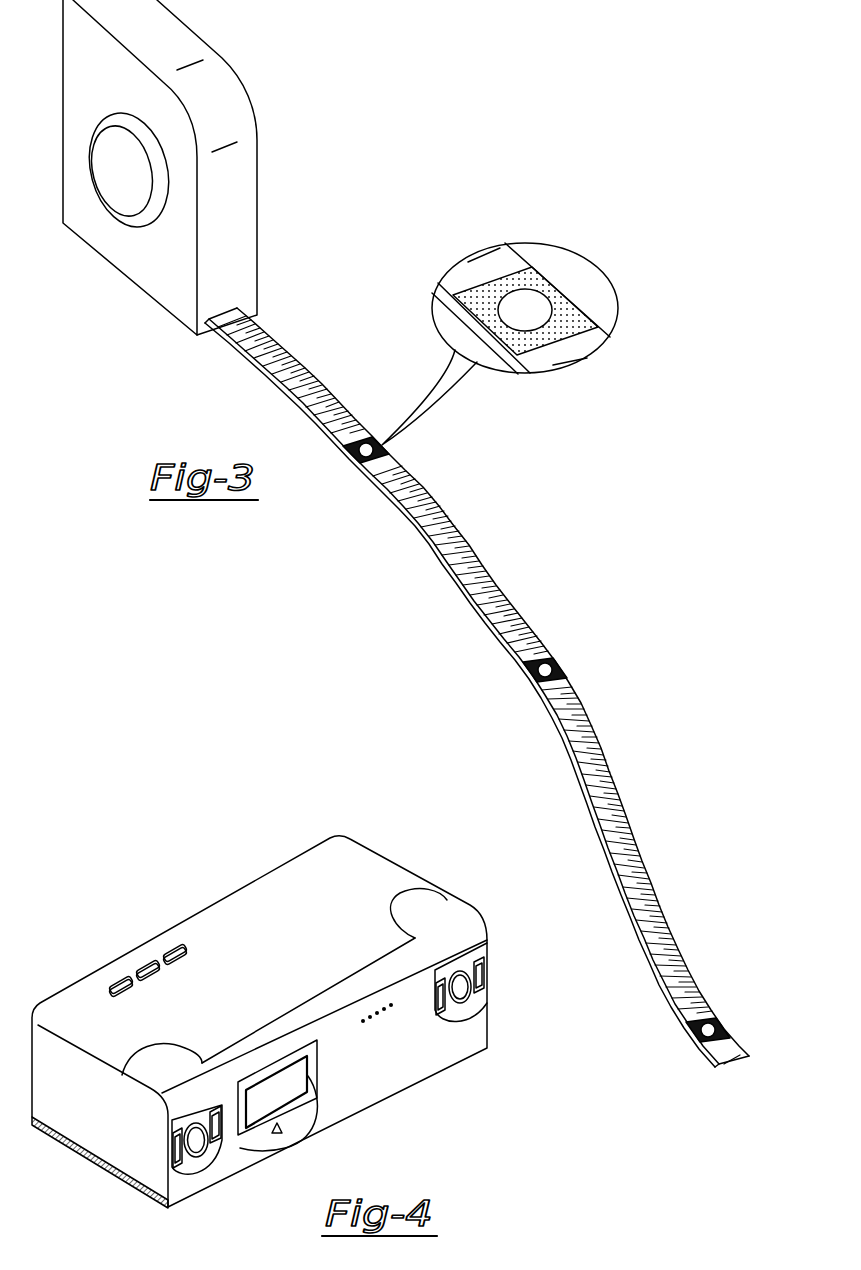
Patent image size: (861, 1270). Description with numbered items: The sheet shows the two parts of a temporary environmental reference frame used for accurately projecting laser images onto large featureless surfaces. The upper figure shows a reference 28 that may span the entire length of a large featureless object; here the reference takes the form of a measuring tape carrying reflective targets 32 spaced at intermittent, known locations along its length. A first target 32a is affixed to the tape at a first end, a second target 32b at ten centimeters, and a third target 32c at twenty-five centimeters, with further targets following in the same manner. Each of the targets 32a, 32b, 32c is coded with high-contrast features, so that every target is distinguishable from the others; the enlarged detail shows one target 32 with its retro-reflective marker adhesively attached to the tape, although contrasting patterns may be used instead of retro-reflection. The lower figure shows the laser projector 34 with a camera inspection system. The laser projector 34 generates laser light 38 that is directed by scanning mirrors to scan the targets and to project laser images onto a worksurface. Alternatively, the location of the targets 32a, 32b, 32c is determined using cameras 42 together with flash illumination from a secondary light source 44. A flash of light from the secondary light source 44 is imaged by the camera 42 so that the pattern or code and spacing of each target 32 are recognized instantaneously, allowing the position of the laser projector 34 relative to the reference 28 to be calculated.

In FIG. 3, the reference 28 is at (463, 528).
In FIG. 3, the reflective targets 32 is at (578, 272).
In FIG. 3, the first target 32a is at (695, 1042).
In FIG. 3, the second target 32b is at (527, 670).
In FIG. 3, the third target 32c is at (350, 457).
In FIG. 4, the laser projector 34 is at (266, 969).
In FIG. 4, the laser light 38 is at (290, 1088).
In FIG. 4, the cameras 42 is at (461, 1000).
In FIG. 4, the secondary light source 44 is at (482, 972).